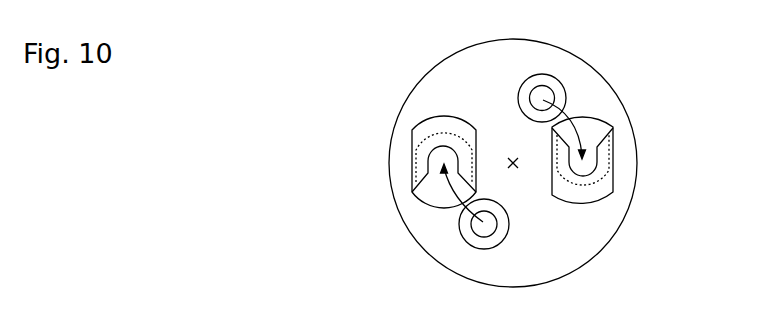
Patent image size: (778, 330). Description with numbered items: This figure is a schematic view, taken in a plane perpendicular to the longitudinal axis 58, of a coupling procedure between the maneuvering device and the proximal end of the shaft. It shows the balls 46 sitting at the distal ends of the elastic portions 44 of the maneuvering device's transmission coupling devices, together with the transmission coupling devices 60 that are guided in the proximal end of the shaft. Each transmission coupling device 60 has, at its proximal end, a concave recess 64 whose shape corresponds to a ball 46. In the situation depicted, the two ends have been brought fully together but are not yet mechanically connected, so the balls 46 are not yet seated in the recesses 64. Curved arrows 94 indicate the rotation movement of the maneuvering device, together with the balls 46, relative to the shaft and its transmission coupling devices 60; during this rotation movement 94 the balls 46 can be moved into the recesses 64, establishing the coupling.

The ball 46 is at (549, 75).
The elastic portion 44 is at (553, 91).
The curved arrow 94 is at (567, 118).
The transmission coupling device 60 is at (603, 198).
The recess 64 is at (603, 181).
The longitudinal axis 58 is at (514, 168).